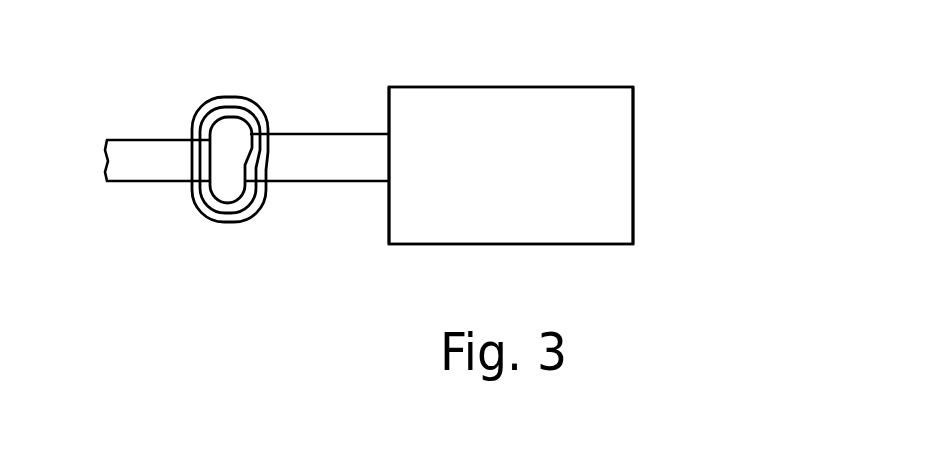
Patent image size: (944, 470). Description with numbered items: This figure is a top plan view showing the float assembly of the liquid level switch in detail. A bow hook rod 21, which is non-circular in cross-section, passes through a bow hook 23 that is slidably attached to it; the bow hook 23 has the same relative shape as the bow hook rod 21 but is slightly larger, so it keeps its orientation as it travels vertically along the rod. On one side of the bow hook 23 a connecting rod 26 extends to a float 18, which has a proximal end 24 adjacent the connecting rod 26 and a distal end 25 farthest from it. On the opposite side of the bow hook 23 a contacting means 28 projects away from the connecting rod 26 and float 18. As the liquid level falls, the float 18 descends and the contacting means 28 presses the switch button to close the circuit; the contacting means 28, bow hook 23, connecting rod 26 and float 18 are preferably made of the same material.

The float 18 is at (537, 107).
The bow hook rod 21 is at (228, 130).
The bow hook 23 is at (225, 215).
The proximal end 24 is at (390, 208).
The distal end 25 is at (633, 162).
The connecting rod 26 is at (328, 139).
The contacting means 28 is at (160, 138).